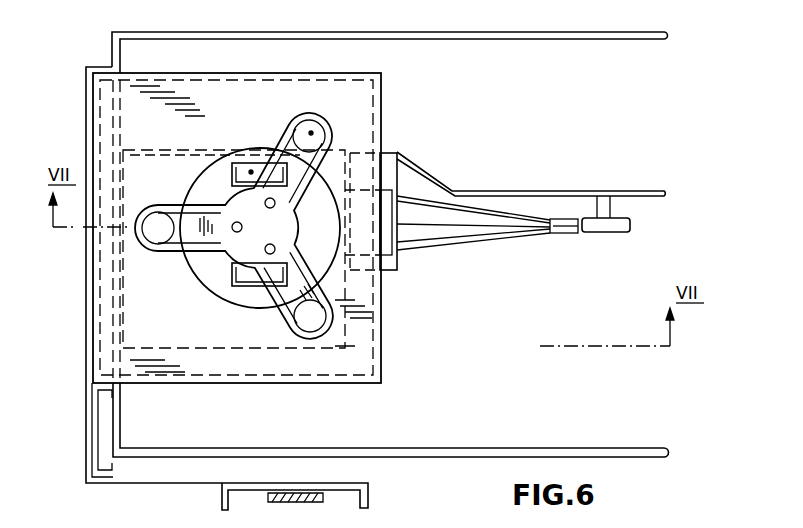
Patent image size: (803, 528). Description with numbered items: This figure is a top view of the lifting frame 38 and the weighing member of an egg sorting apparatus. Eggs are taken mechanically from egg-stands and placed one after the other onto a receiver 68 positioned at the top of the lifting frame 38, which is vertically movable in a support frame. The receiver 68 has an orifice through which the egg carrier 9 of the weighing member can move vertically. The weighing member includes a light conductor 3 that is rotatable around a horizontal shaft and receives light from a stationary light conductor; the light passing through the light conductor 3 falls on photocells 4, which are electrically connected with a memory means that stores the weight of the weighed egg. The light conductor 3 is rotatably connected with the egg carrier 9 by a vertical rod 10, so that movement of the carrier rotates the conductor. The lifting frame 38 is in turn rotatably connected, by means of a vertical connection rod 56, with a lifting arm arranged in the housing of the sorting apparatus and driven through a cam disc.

The light conductor 3 is at (476, 216).
The photocells 4 is at (618, 223).
The egg carrier 9 is at (311, 133).
The vertical rod 10 is at (247, 274).
The lifting frame 38 is at (393, 321).
The vertical connection rod 56 is at (315, 506).
The receiver 68 is at (365, 98).